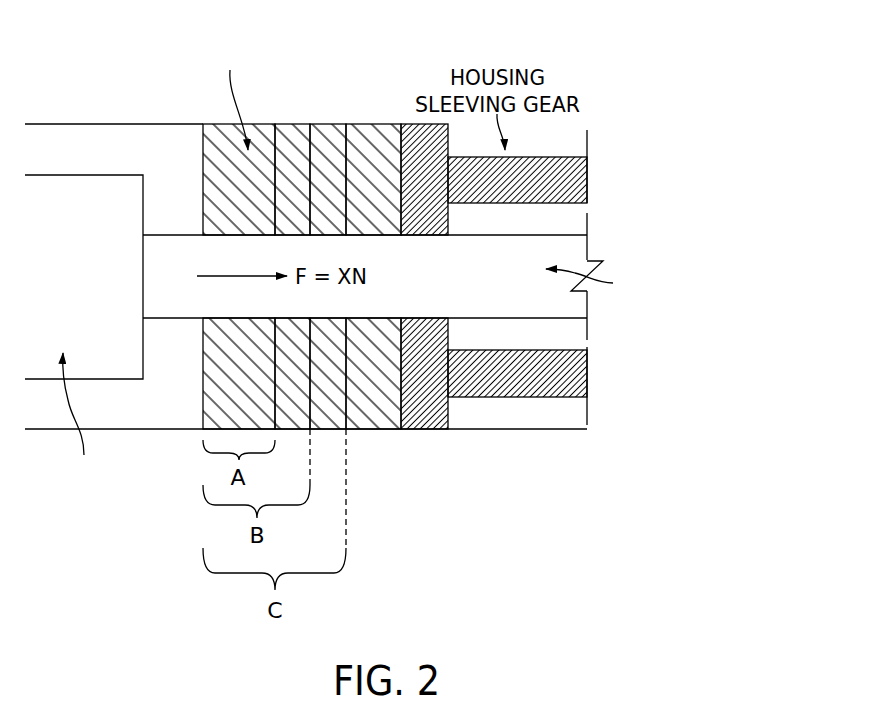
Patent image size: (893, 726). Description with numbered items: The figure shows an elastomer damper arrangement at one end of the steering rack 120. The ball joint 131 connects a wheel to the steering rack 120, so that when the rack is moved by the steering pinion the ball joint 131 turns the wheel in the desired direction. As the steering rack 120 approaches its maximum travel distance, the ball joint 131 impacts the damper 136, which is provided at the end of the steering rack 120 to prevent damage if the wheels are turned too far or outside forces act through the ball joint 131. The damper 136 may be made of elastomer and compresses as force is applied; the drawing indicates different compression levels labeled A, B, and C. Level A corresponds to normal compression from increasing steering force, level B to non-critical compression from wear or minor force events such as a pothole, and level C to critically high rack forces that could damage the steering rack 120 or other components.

The ball joint 131 is at (72, 175).
The damper 136 is at (274, 124).
The steering rack 120 is at (587, 305).